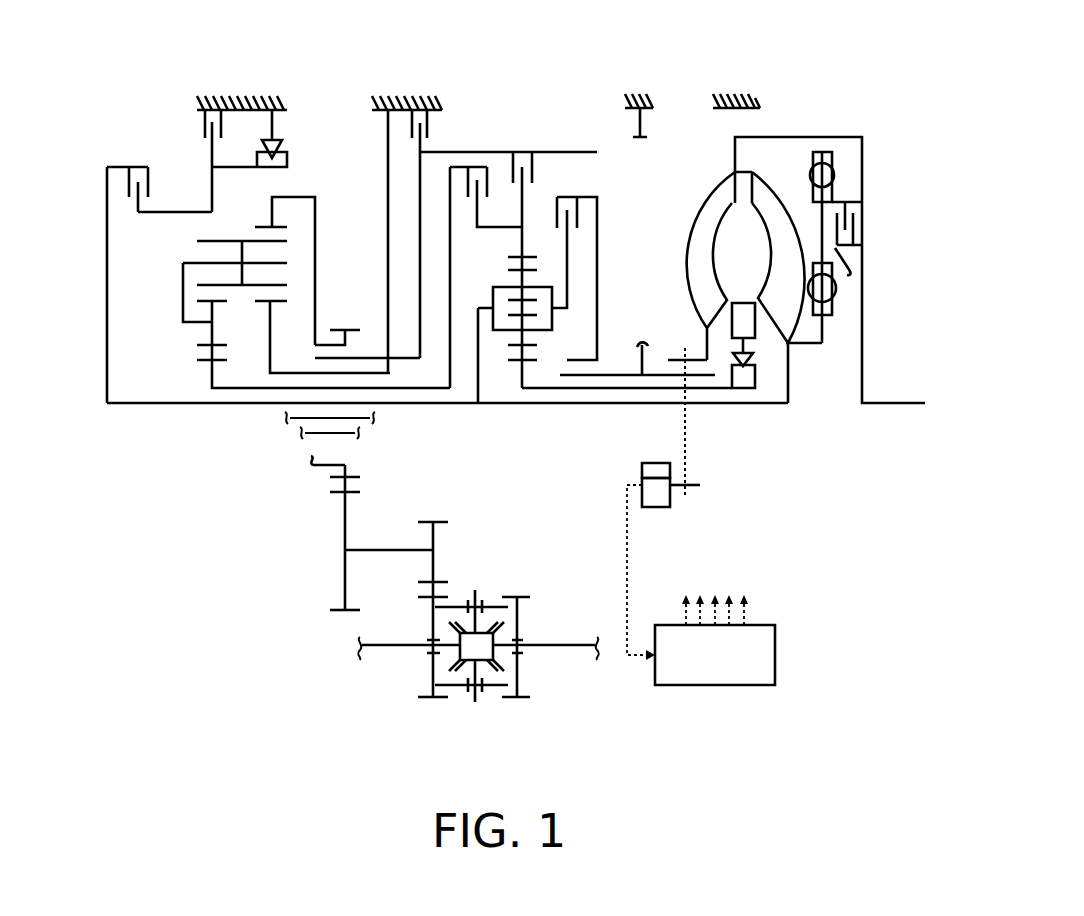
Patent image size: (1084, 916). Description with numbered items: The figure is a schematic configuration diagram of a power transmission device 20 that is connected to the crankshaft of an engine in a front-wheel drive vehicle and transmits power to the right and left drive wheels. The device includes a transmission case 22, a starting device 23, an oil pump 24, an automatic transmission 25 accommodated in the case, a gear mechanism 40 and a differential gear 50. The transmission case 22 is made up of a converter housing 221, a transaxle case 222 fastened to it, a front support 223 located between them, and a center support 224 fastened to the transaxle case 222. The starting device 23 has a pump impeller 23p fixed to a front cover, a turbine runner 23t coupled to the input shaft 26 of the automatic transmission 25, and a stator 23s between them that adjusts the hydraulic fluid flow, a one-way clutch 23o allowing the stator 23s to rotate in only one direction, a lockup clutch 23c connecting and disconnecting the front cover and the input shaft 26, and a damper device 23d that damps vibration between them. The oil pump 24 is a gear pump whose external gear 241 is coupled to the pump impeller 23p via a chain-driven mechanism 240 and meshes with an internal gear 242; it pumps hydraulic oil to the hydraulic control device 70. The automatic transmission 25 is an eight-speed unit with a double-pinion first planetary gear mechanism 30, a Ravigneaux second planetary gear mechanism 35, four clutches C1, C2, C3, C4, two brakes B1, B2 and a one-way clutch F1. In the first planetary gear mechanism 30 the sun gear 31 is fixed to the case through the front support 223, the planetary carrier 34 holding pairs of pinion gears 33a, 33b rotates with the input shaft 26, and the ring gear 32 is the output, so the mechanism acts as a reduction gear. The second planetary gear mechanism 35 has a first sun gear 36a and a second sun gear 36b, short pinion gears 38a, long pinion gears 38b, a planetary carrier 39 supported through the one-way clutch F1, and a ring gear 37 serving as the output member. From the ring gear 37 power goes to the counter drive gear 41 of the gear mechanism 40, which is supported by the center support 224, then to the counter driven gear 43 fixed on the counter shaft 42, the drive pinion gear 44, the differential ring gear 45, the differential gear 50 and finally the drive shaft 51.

The power transmission device 20 is at (790, 90).
The transmission case 22 is at (190, 88).
The converter housing 221 is at (733, 90).
The transaxle case 222 is at (437, 97).
The front support 223 is at (641, 360).
The center support 224 is at (385, 312).
The starting device 23 is at (782, 278).
The pump impeller 23p is at (693, 213).
The turbine runner 23t is at (778, 200).
The stator 23s is at (740, 302).
The one-way clutch 23o is at (766, 378).
The damper device 23d is at (840, 182).
The lockup clutch 23c is at (855, 254).
The oil pump 24 is at (665, 498).
The chain-driven mechanism 240 is at (692, 433).
The external gear 241 is at (655, 488).
The internal gear 242 is at (640, 468).
The automatic transmission 25 is at (603, 90).
The input shaft 26 is at (786, 405).
The first planetary gear mechanism 30 is at (496, 263).
The sun gear 31 is at (522, 370).
The ring gear 32 is at (538, 255).
The pinion gear 33a is at (540, 316).
The pinion gear 33b is at (540, 272).
The planetary carrier 34 is at (492, 300).
The second planetary gear mechanism 35 is at (183, 352).
The first sun gear 36a is at (208, 363).
The second sun gear 36b is at (265, 303).
The ring gear 37 is at (303, 200).
The short pinion gear 38a is at (208, 331).
The long pinion gear 38b is at (199, 240).
The planetary carrier 39 is at (183, 268).
The gear mechanism 40 is at (349, 598).
The counter drive gear 41 is at (325, 469).
The counter shaft 42 is at (370, 548).
The counter driven gear 43 is at (340, 575).
The drive pinion gear 44 is at (445, 520).
The differential ring gear 45 is at (430, 700).
The differential gear 50 is at (472, 620).
The drive shaft 51 is at (388, 650).
The hydraulic control device 70 is at (711, 688).
The brake B1 is at (427, 130).
The brake B2 is at (203, 132).
The clutch C1 is at (488, 180).
The clutch C2 is at (128, 188).
The clutch C3 is at (532, 170).
The clutch C4 is at (578, 215).
The one-way clutch F1 is at (287, 160).